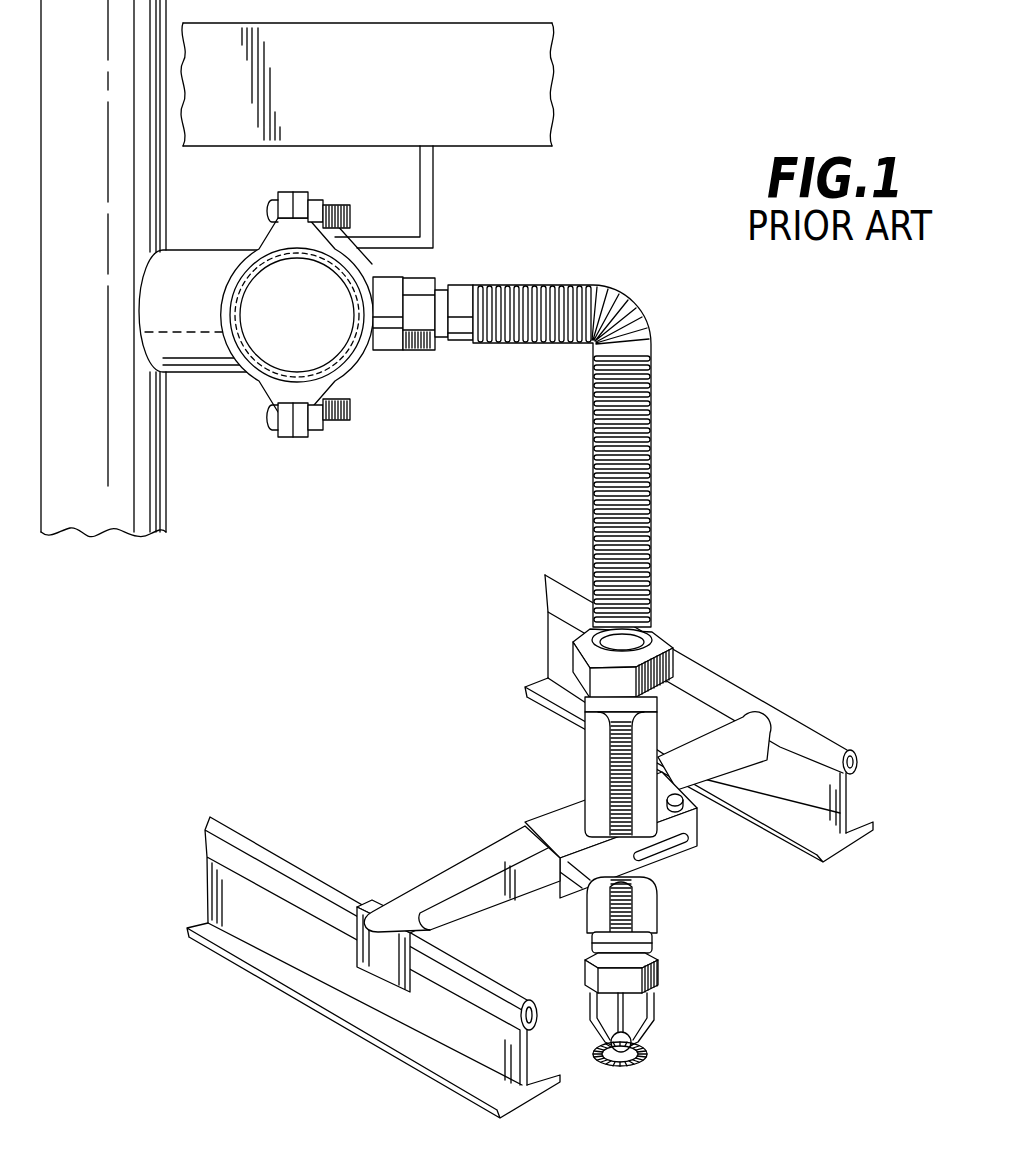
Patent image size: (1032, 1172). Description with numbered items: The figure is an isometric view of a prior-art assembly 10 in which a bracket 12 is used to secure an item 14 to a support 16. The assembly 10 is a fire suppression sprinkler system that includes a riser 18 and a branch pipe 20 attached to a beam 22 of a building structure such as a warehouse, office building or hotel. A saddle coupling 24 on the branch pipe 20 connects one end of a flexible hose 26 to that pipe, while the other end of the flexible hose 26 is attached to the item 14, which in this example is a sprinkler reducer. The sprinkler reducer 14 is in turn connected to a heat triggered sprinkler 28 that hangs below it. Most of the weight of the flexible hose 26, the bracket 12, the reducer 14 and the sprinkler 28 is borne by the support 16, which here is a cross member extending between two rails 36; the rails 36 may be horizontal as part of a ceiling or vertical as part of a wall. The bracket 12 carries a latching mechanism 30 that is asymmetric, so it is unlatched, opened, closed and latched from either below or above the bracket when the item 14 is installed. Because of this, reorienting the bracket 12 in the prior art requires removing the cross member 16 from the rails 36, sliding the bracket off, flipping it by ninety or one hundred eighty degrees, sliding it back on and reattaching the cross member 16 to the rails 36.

The assembly 10 is at (297, 548).
The bracket 12 is at (553, 817).
The item 14 is at (663, 718).
The support 16 is at (472, 875).
The riser 18 is at (76, 522).
The branch pipe 20 is at (347, 282).
The beam 22 is at (535, 72).
The saddle coupling 24 is at (277, 387).
The flexible hose 26 is at (650, 458).
The heat triggered sprinkler 28 is at (648, 1017).
The latching mechanism 30 is at (571, 882).
The rails 36 is at (817, 725).